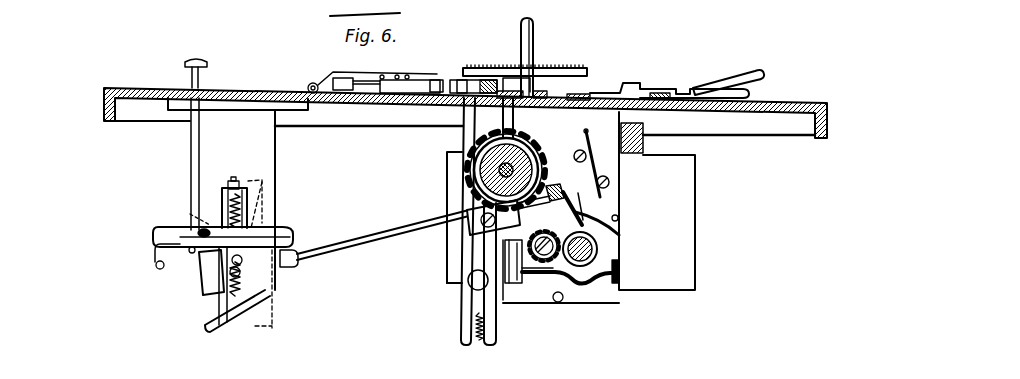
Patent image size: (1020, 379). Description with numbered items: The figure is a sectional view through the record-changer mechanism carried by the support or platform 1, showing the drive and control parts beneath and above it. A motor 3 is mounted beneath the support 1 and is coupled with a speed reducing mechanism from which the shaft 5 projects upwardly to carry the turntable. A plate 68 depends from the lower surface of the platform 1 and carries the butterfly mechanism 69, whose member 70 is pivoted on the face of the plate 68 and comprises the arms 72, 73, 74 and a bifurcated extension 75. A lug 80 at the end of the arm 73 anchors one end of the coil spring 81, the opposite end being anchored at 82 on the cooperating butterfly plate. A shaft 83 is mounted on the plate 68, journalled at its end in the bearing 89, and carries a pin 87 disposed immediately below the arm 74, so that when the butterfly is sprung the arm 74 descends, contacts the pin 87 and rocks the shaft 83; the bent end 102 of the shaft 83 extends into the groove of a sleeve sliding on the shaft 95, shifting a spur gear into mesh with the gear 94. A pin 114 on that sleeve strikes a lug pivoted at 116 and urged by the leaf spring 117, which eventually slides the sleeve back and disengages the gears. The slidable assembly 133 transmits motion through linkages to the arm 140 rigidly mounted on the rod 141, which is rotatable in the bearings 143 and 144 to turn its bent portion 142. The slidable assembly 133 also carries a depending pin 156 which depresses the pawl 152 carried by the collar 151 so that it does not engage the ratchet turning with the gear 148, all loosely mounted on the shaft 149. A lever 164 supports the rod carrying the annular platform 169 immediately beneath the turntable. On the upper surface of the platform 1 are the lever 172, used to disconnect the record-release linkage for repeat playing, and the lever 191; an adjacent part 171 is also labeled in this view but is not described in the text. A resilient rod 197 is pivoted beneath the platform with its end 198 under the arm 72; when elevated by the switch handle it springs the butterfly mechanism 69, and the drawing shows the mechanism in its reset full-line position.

The support or platform 1 is at (238, 91).
The motor 3 is at (683, 220).
The shaft 5 is at (519, 28).
The plate 68 is at (268, 145).
The butterfly mechanism 69 is at (264, 221).
The member 70 is at (220, 225).
The arm 72 is at (190, 234).
The arm 73 is at (249, 183).
The arm 74 is at (296, 234).
The bifurcated extension 75 is at (225, 263).
The lug 80 is at (233, 181).
The coil spring 81 is at (240, 208).
The spring anchorage 82 is at (233, 298).
The shaft 83 is at (372, 242).
The pin 87 is at (297, 250).
The bearing 89 is at (548, 186).
The gear 94 is at (556, 302).
The shaft 95 is at (597, 251).
The bent end of shaft 102 is at (568, 208).
The pin 114 is at (620, 235).
The pivot 116 is at (610, 182).
The leaf spring 117 is at (590, 163).
The slidable assembly 133 is at (549, 95).
The arm 140 is at (517, 258).
The rod 141 is at (532, 268).
The bent portion 142 is at (596, 286).
The bearing 143 is at (621, 273).
The bearing 144 is at (503, 300).
The gear 148 is at (478, 165).
The shaft 149 is at (500, 170).
The collar 151 is at (483, 181).
The pawl 152 is at (530, 143).
The pin 156 is at (514, 116).
The lever 164 is at (470, 325).
The platform 169 is at (583, 67).
The lever 171 is at (582, 198).
The lever 172 is at (762, 73).
The lever 191 is at (747, 99).
The rod 197 is at (189, 153).
The end of rod 198 is at (190, 255).